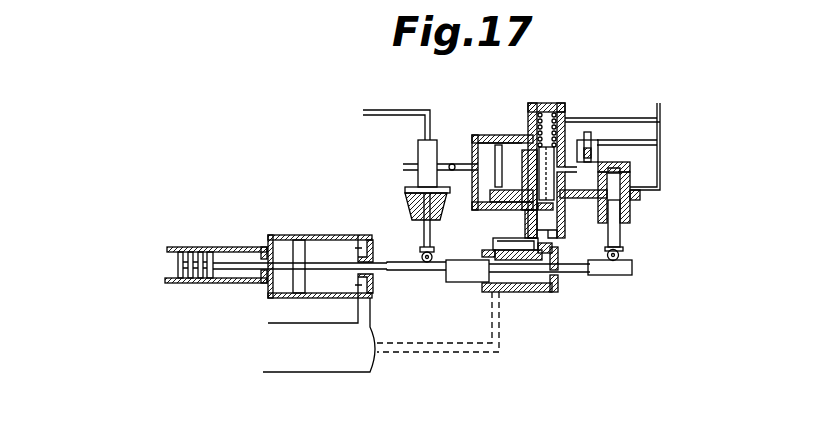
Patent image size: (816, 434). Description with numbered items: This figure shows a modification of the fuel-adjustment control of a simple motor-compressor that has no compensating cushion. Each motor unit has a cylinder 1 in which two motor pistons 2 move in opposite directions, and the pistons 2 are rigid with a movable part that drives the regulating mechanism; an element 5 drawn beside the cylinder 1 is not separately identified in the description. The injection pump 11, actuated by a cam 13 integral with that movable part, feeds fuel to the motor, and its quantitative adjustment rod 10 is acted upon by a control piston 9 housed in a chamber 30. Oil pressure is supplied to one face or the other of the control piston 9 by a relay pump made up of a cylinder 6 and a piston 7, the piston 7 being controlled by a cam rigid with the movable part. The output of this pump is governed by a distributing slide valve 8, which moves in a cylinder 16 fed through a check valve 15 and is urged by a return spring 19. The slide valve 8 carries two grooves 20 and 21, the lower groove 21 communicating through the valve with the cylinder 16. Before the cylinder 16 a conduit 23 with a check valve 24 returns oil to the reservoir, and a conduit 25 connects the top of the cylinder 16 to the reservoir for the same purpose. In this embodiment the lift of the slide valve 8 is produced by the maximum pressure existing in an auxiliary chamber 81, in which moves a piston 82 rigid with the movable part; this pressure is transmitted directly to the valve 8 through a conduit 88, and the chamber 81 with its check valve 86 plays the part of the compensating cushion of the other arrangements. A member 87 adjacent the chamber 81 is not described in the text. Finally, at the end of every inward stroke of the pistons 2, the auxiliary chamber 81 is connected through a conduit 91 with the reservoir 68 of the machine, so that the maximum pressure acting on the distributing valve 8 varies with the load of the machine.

The cylinder 1 is at (238, 276).
The motor pistons 2 is at (201, 258).
The cylinder 5 is at (326, 258).
The cylinder 6 is at (631, 179).
The piston 7 is at (621, 238).
The slide valve 8 is at (522, 136).
The control piston 9 is at (500, 136).
The quantitative adjustment rod 10 is at (443, 147).
The injection pump 11 is at (417, 147).
The cam 13 is at (433, 255).
The check valve 15 is at (657, 138).
The cylinder 16 is at (558, 115).
The return spring 19 is at (540, 116).
The groove 20 is at (570, 140).
The groove 21 is at (527, 218).
The conduit 23 is at (583, 183).
The check valve 24 is at (603, 140).
The conduit 25 is at (643, 118).
The chamber 30 is at (480, 150).
The reservoir 68 is at (330, 362).
The auxiliary chamber 81 is at (533, 278).
The piston 82 is at (465, 283).
The check valve 86 is at (548, 246).
The upper guide 87 is at (502, 270).
The conduit 88 is at (553, 250).
The conduit 91 is at (472, 353).